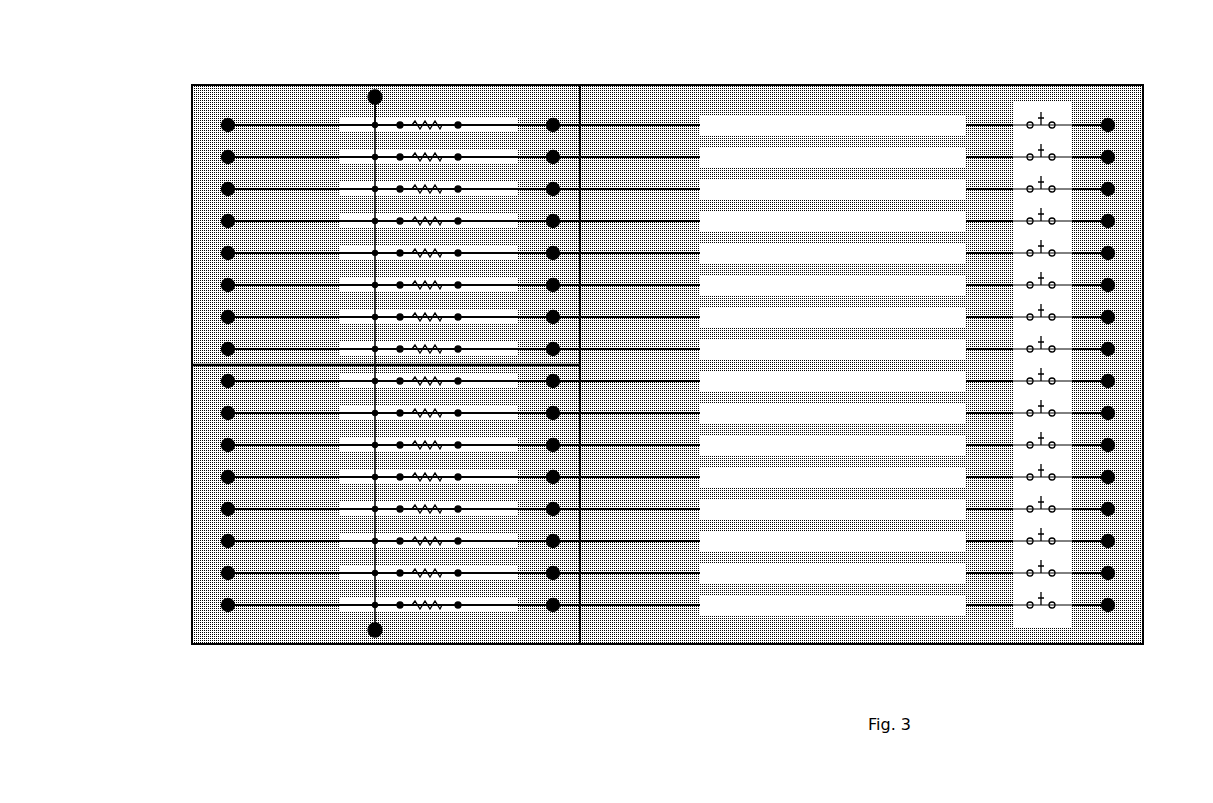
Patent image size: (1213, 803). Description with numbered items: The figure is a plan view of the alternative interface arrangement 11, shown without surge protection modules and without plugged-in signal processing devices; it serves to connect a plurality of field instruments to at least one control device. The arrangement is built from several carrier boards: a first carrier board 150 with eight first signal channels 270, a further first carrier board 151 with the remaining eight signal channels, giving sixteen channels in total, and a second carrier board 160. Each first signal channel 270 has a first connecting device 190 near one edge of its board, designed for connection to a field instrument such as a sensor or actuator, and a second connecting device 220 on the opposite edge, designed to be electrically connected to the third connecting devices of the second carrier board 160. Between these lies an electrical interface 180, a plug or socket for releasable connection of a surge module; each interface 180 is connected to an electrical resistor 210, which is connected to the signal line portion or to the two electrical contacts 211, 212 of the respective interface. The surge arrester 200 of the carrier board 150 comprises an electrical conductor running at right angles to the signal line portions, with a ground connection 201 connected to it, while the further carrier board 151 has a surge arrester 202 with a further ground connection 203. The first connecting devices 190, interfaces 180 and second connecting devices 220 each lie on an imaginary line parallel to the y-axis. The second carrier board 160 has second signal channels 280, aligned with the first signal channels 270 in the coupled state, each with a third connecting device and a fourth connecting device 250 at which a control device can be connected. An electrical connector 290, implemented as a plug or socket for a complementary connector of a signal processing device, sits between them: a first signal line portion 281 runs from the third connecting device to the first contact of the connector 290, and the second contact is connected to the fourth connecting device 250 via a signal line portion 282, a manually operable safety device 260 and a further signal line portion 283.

The interface arrangement 11 is at (810, 55).
The first carrier board 150 is at (313, 646).
The further first carrier board 151 is at (306, 123).
The second carrier board 160 is at (733, 647).
The electrical interface 180 is at (361, 115).
The first connecting device 190 is at (230, 122).
The surge arrester 200 is at (417, 612).
The ground connection 201 is at (400, 610).
The surge arrester 202 is at (380, 113).
The further ground connection 203 is at (378, 100).
The electrical resistor 210 is at (445, 122).
The first electrical contact of the interface 211 is at (436, 123).
The second electrical contact of the interface 212 is at (478, 124).
The second connecting device 220 is at (553, 120).
The fourth connecting device 250 is at (1112, 123).
The safety device 260 is at (1040, 610).
The first signal channel 270 is at (318, 121).
The second signal channel 280 is at (622, 115).
The first signal line portion 281 is at (690, 125).
The signal line portion 282 is at (992, 127).
The further signal line portion 283 is at (1083, 127).
The electrical connector 290 is at (952, 117).